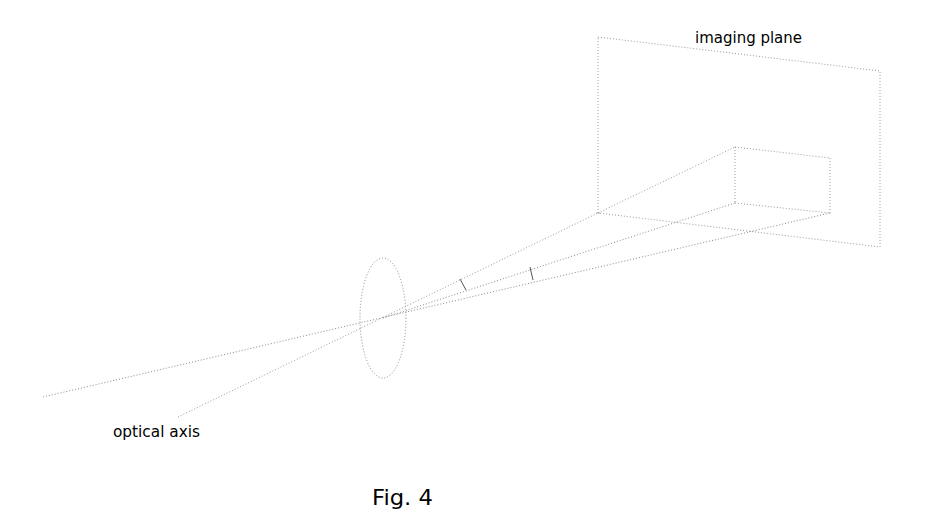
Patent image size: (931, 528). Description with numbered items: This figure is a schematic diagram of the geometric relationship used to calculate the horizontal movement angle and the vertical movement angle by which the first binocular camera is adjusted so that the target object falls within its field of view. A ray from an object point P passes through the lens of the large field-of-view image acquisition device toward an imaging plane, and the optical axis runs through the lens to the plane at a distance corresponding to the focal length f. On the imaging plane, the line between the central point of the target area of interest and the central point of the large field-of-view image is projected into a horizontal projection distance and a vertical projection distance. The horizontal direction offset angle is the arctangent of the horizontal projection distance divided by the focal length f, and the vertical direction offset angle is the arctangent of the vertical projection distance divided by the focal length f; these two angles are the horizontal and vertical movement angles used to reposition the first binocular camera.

The object point P is at (422, 313).
The focal length f is at (650, 184).
The element lens is at (383, 305).